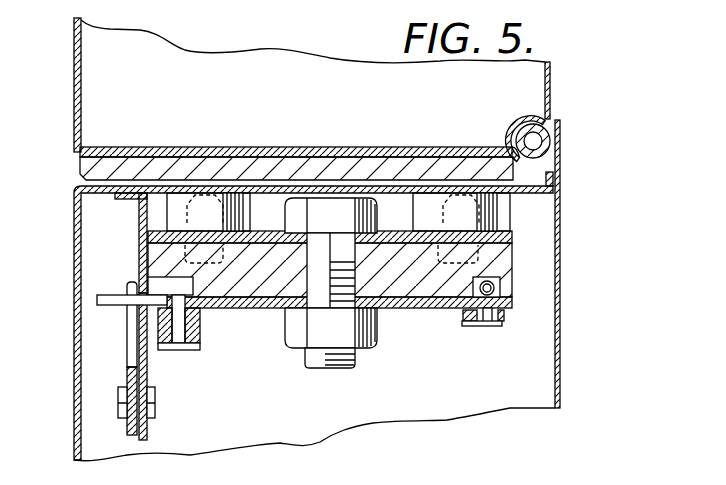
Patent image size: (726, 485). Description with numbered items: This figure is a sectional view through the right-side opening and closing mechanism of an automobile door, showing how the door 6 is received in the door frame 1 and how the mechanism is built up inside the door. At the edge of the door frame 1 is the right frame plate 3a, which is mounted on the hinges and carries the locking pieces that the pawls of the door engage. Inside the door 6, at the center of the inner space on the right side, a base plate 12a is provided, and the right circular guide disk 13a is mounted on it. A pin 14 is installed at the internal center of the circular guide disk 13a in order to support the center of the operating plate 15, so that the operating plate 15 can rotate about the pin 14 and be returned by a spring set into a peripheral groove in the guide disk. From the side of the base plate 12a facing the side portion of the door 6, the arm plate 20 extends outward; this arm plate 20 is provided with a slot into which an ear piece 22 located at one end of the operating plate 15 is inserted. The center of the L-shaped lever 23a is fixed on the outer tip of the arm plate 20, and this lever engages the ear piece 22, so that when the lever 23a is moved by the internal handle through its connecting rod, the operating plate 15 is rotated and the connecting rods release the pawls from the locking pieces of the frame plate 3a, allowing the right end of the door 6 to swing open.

The door frame 1 is at (546, 83).
The right frame plate 3a is at (400, 157).
The door 6 is at (560, 388).
The base plate 12a is at (424, 232).
The right circular guide disk 13a is at (508, 268).
The pin 14 is at (345, 368).
The operating plate 15 is at (410, 310).
The arm plate 20 is at (148, 364).
The ear piece 22 is at (116, 292).
The L-shaped lever 23a is at (126, 431).